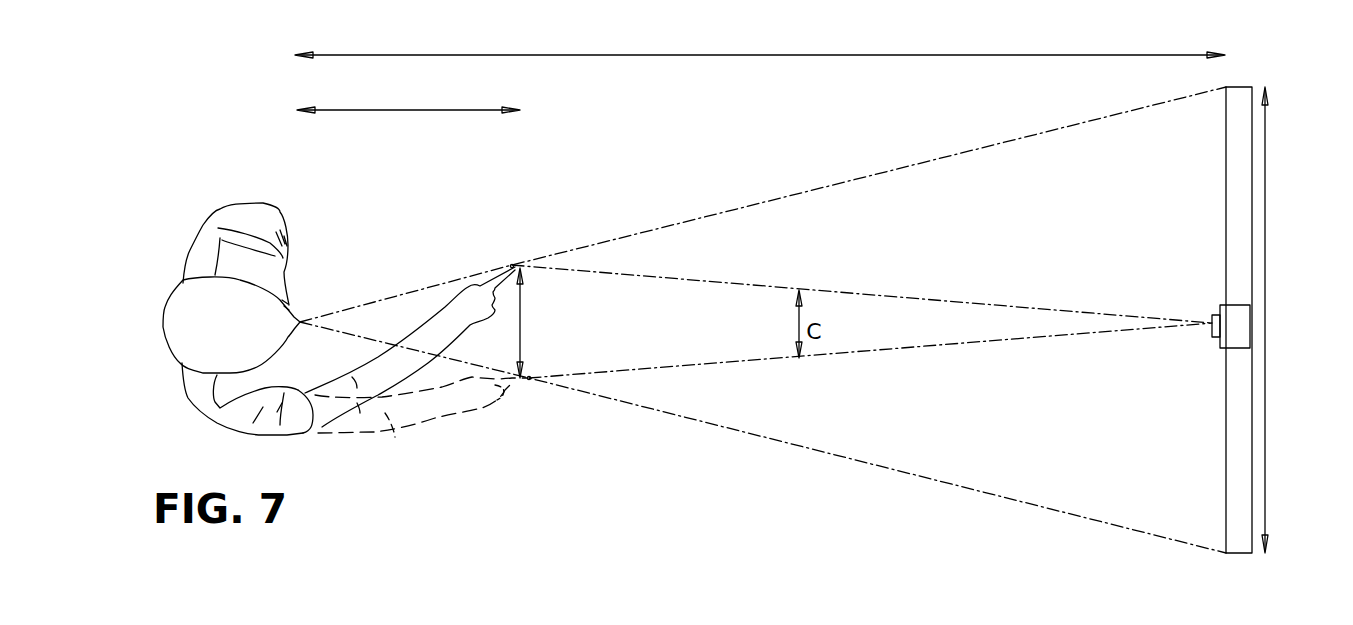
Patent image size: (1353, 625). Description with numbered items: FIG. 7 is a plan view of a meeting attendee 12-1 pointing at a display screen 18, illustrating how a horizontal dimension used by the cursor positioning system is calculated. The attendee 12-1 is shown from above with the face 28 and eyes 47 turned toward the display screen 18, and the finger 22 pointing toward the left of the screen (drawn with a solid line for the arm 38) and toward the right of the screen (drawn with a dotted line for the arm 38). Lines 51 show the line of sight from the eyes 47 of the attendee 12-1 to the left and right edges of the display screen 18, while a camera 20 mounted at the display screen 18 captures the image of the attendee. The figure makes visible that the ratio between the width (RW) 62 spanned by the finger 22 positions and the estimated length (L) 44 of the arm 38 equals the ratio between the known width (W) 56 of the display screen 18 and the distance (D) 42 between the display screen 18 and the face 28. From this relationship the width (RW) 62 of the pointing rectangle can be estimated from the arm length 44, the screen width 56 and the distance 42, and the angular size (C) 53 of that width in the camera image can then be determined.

The meeting attendee 12-1 is at (238, 319).
The face 28 is at (293, 297).
The eyes 47 is at (298, 317).
The finger 22 is at (517, 265).
The width (RW) 62 is at (520, 303).
The arm 38 is at (400, 367).
The distance (D) 42 is at (957, 55).
The estimated length (L) 44 is at (365, 110).
The lines 51 is at (897, 170).
The angular size (C) 53 is at (797, 323).
The display screen 18 is at (1226, 250).
The camera 20 is at (1232, 337).
The known width (W) 56 is at (1266, 447).